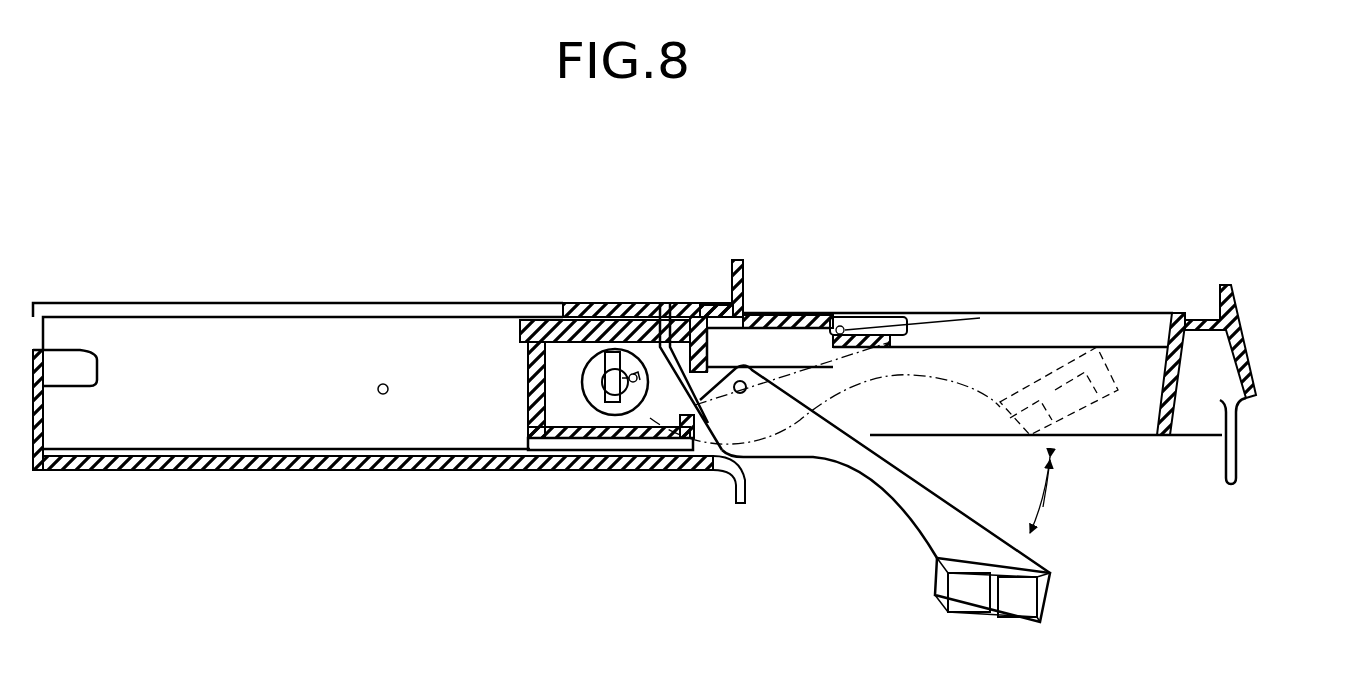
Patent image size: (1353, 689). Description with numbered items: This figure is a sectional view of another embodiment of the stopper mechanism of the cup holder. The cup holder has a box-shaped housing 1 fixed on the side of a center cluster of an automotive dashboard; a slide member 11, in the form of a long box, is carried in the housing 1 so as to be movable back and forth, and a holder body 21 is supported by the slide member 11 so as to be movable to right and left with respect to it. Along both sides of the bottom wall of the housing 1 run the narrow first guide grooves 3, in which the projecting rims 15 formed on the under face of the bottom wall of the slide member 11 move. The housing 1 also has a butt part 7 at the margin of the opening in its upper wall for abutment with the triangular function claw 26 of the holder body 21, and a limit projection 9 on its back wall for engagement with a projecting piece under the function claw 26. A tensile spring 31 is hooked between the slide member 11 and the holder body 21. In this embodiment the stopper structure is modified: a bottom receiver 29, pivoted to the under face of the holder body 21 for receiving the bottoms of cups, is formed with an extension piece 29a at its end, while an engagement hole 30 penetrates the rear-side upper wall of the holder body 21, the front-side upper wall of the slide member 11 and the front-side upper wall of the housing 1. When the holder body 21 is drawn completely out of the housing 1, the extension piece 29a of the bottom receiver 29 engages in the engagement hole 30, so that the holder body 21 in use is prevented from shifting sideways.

The housing 1 is at (297, 272).
The first guide grooves 3 is at (270, 453).
The butt part 7 is at (572, 300).
The limit projection 9 is at (68, 355).
The slide member 11 is at (520, 388).
The projecting rims 15 is at (608, 440).
The holder body 21 is at (1257, 310).
The function claw 26 is at (556, 307).
The bottom receiver 29 is at (930, 520).
The extension piece 29a is at (666, 305).
The engagement hole 30 is at (650, 302).
The tensile spring 31 is at (583, 395).